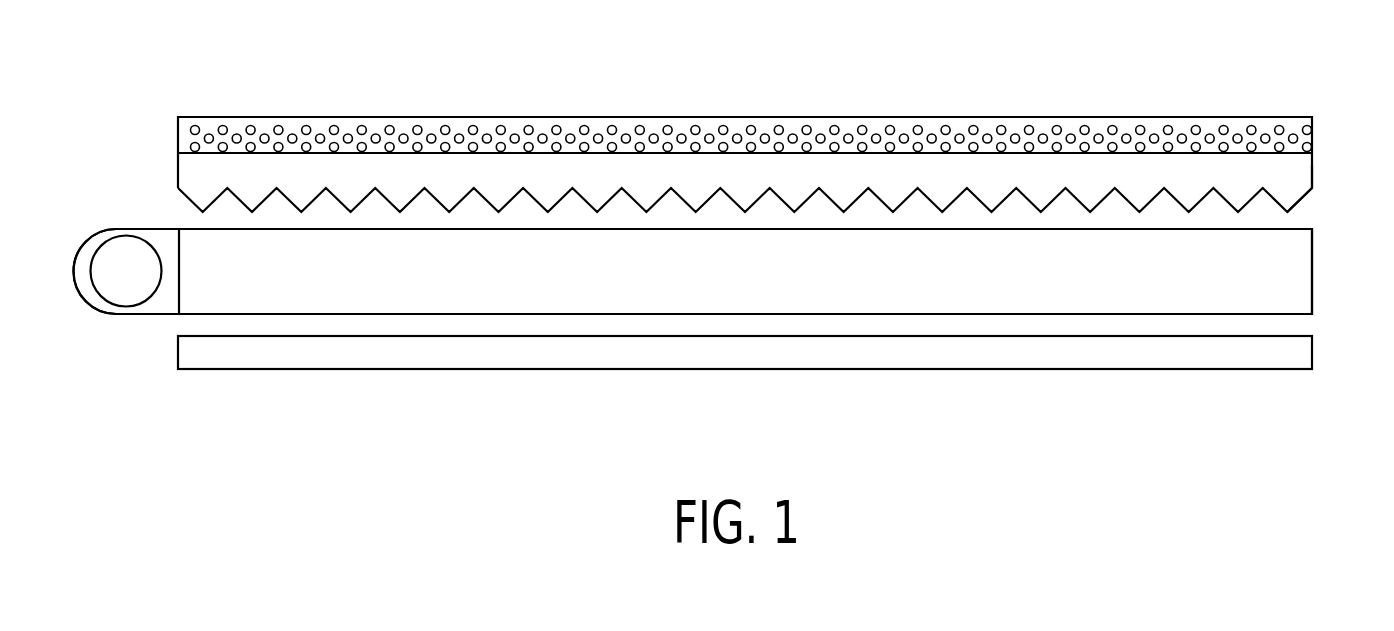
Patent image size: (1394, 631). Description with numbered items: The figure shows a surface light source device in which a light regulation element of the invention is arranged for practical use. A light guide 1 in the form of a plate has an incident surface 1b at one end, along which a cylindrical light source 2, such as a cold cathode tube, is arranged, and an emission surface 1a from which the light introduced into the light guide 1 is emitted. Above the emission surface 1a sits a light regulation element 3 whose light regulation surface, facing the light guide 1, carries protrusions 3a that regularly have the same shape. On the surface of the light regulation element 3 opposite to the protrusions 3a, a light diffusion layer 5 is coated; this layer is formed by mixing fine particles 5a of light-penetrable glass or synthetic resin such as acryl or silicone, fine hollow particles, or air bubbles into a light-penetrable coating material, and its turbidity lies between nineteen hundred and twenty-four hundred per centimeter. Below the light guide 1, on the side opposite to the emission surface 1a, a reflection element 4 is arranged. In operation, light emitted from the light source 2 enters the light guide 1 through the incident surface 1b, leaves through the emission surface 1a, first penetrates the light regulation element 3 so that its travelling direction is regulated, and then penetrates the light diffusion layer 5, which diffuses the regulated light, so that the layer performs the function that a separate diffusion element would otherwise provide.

The light guide 1 is at (707, 288).
The emission surface 1a is at (1303, 215).
The incident surface 1b is at (162, 305).
The cylindrical light source 2 is at (142, 288).
The light regulation element 3 is at (192, 172).
The protrusions 3a is at (1303, 163).
The reflection element 4 is at (1028, 370).
The light diffusion layer 5 is at (1147, 117).
The fine particles 5a is at (890, 126).